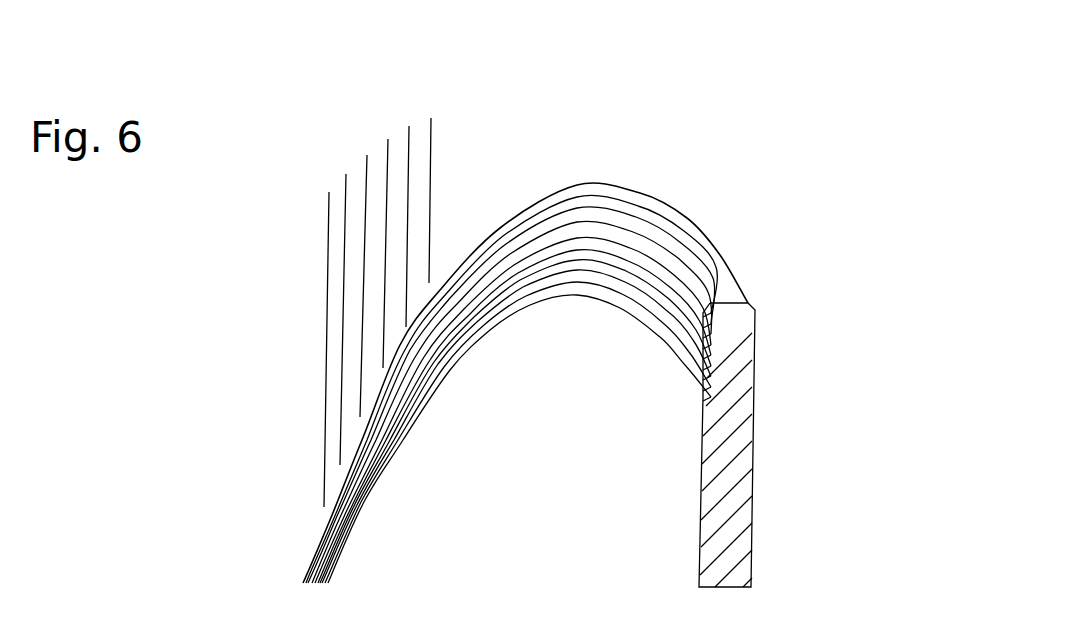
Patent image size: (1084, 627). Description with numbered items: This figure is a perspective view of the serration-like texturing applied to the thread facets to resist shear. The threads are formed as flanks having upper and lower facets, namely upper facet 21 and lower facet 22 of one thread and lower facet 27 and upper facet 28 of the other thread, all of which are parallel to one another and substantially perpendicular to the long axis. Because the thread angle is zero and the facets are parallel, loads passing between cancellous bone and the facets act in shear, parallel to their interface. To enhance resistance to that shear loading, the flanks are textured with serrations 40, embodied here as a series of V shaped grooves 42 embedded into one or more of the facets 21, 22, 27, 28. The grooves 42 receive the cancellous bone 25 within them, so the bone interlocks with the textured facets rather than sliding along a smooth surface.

The upper facet 21 is at (823, 445).
The lower facet 22 is at (823, 445).
The cancellous bone 25 is at (318, 367).
The lower facet 27 is at (823, 445).
The upper facet 28 is at (735, 465).
The serrations 40 is at (366, 227).
The V shaped grooves 42 is at (608, 247).